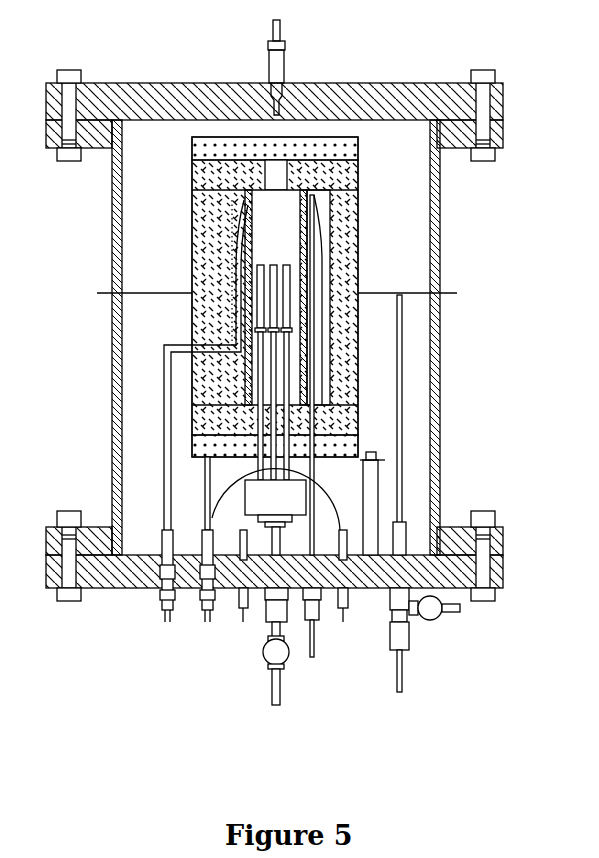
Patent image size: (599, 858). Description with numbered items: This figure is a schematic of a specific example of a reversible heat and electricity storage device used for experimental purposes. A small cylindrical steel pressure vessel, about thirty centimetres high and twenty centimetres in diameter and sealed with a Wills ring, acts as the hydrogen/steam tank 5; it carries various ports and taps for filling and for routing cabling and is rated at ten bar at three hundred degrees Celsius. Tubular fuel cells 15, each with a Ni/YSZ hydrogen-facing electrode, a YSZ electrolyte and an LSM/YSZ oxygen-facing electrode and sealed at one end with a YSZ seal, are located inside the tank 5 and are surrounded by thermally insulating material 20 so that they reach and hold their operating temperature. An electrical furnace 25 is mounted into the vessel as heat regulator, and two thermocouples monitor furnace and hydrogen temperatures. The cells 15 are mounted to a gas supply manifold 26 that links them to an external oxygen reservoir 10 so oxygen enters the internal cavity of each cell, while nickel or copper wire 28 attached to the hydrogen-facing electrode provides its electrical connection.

The hydrogen tank 5 is at (437, 245).
The oxygen tank 10 is at (276, 663).
The fuel cells 15 is at (263, 282).
The thermally insulating material 20 is at (345, 333).
The electrical furnace 25 is at (247, 372).
The gas supply manifold 26 is at (263, 500).
The nickel or copper wire 28 is at (335, 492).